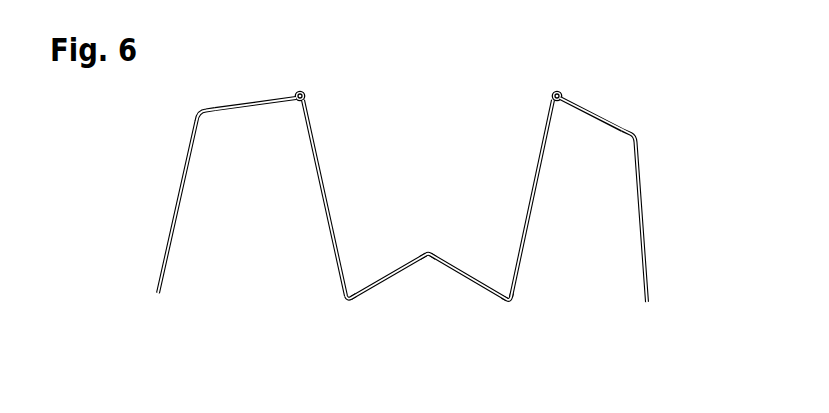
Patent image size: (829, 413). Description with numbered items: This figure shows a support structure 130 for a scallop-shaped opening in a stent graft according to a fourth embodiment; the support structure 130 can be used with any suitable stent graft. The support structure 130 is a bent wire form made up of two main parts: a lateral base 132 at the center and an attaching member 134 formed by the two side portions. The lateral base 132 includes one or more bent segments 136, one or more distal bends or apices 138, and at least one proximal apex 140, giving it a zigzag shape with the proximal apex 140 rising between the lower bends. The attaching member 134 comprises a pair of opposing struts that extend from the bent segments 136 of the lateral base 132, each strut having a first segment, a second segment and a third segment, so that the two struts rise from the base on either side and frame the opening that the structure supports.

The support structure 130 is at (646, 93).
The lateral base 132 is at (425, 276).
The attaching member 134 is at (264, 88).
The bent segments 136 is at (346, 301).
The distal bends or apices 138 is at (490, 308).
The proximal apex 140 is at (428, 251).